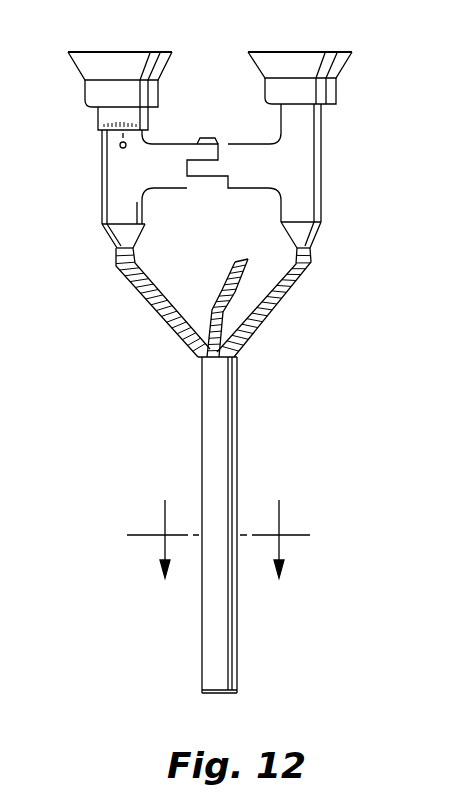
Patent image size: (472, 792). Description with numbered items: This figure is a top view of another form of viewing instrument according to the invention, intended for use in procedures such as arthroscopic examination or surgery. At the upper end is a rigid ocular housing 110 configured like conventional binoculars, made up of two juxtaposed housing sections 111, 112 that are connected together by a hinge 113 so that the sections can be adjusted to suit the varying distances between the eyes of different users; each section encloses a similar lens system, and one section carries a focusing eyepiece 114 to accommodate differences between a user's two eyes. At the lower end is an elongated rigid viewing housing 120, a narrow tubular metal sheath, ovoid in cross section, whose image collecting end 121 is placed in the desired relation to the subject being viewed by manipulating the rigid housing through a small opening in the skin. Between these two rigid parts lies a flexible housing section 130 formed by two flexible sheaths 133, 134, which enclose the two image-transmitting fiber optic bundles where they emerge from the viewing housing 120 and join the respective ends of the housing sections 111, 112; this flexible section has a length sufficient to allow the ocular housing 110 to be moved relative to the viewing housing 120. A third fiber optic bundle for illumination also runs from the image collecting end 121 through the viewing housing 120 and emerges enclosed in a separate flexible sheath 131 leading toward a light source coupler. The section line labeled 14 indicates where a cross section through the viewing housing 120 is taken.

The ocular housing 110 is at (216, 66).
The housing section 111 is at (115, 206).
The housing section 112 is at (312, 180).
The hinge 113 is at (207, 150).
The focusing eyepiece 114 is at (127, 67).
The viewing housing 120 is at (237, 455).
The image collecting end 121 is at (222, 665).
The flexible housing section 130 is at (283, 318).
The flexible sheath 131 is at (225, 283).
The flexible sheath 133 is at (166, 326).
The flexible sheath 134 is at (250, 327).
The section line 14- 14 is at (218, 528).